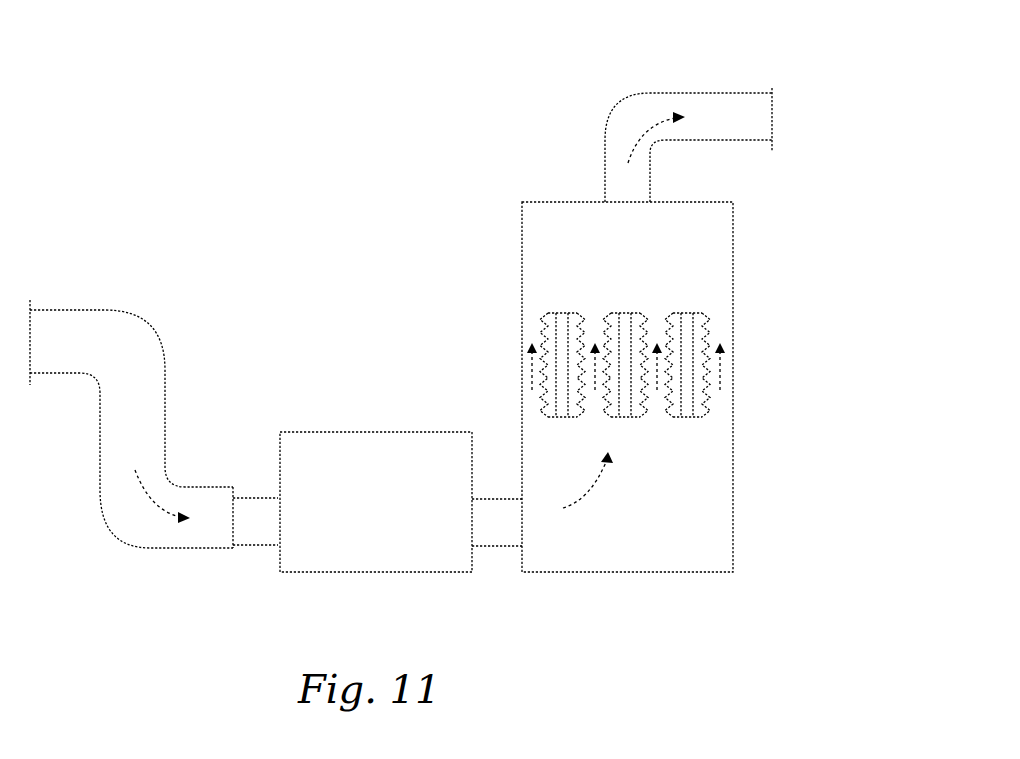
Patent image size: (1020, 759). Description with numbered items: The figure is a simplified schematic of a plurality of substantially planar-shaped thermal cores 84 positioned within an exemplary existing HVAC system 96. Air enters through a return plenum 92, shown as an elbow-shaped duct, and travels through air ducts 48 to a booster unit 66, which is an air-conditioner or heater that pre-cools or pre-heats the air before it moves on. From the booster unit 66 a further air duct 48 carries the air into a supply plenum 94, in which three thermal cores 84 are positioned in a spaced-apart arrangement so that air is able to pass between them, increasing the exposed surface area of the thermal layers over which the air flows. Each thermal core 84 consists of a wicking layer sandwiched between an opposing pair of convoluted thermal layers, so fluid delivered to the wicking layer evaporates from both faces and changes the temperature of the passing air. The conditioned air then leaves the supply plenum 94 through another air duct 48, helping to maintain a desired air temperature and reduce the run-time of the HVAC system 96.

The air duct 48 is at (250, 503).
The booster unit 66 is at (396, 437).
The thermal core 84 is at (555, 303).
The return plenum 92 is at (150, 535).
The supply plenum 94 is at (668, 557).
The HVAC system 96 is at (323, 285).